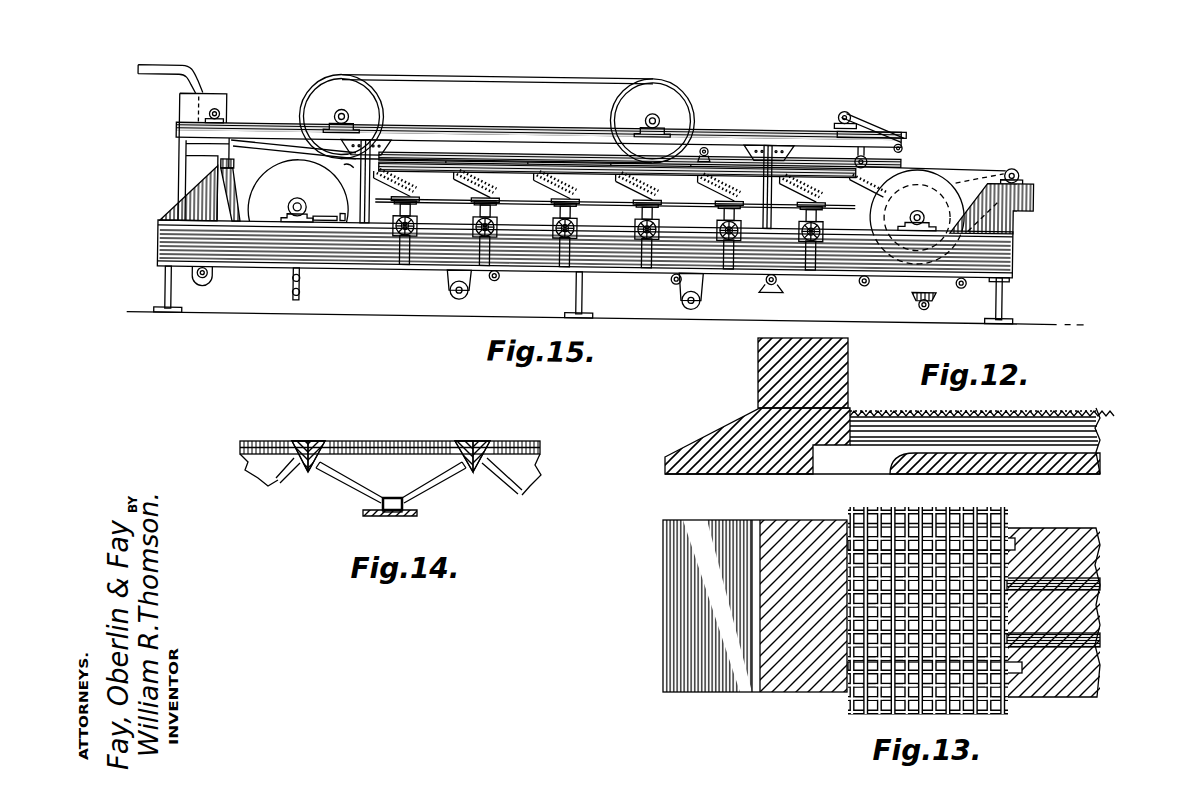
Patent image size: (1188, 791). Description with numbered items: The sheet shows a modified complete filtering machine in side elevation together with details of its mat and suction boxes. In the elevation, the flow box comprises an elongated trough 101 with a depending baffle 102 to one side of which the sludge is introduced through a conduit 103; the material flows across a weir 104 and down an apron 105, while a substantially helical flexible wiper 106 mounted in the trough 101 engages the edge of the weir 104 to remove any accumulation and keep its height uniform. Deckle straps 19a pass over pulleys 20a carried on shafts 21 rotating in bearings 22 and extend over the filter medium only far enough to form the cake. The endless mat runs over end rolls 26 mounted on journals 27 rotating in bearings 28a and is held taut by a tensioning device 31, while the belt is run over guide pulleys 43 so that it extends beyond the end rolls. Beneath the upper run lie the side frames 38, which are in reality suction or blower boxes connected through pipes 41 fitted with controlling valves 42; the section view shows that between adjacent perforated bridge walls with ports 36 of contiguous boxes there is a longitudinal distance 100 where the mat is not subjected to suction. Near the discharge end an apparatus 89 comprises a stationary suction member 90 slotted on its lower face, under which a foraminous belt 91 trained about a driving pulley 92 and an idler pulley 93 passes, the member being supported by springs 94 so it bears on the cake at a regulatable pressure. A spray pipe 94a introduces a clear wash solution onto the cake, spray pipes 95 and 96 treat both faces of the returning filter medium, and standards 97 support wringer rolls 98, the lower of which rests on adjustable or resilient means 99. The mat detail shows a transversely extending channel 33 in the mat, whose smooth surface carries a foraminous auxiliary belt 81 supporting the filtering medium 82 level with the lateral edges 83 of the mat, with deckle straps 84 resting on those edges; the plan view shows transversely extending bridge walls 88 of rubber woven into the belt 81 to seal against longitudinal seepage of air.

In FIG. 15, the deckle straps 19a is at (538, 72).
In FIG. 15, the pulley 20a is at (376, 110).
In FIG. 15, the shaft 21 is at (336, 114).
In FIG. 15, the bearing 22 is at (344, 108).
In FIG. 15, the end roll 26 is at (606, 212).
In FIG. 15, the shaft or journal 27 is at (283, 209).
In FIG. 15, the bearing 28a is at (291, 202).
In FIG. 15, the tensioning device 31 is at (337, 207).
In FIG. 12, the transversely extending channel 33 is at (782, 430).
In FIG. 14, the ports 36 is at (413, 441).
In FIG. 15, the side frames 38 is at (424, 178).
In FIG. 14, the side frames 38 is at (357, 468).
In FIG. 15, the pipes 41 is at (483, 244).
In FIG. 15, the valves 42 is at (418, 214).
In FIG. 15, the guide pulleys 43 is at (1019, 162).
In FIG. 12, the foraminous auxiliary belt 81 is at (1098, 420).
In FIG. 13, the foraminous auxiliary belt 81 is at (923, 510).
In FIG. 12, the filtering medium 82 is at (1033, 410).
In FIG. 13, the lateral edges of the mat 83 is at (803, 672).
In FIG. 12, the deckle straps 84 is at (849, 374).
In FIG. 13, the transversely extending bridge walls 88 is at (1013, 540).
In FIG. 15, the moisture withdrawing apparatus 89 is at (880, 118).
In FIG. 15, the stationary suction member 90 is at (868, 150).
In FIG. 15, the foraminous belt 91 is at (866, 112).
In FIG. 15, the driving pulley 92 is at (840, 102).
In FIG. 15, the idler pulley 93 is at (914, 134).
In FIG. 15, the springs 94 is at (622, 276).
In FIG. 15, the spray pipe 94a is at (706, 140).
In FIG. 15, the spray pipe 95 is at (935, 296).
In FIG. 15, the spray pipe 96 is at (778, 278).
In FIG. 15, the standards 97 is at (290, 272).
In FIG. 15, the wringer rolls 98 is at (295, 279).
In FIG. 15, the adjustable or resilient means 99 is at (299, 300).
In FIG. 14, the longitudinal distance 100 is at (479, 445).
In FIG. 15, the elongated trough 101 is at (202, 152).
In FIG. 15, the depending baffle 102 is at (215, 105).
In FIG. 15, the conduit 103 is at (158, 74).
In FIG. 15, the weir 104 is at (227, 99).
In FIG. 15, the apron 105 is at (233, 114).
In FIG. 15, the helical flexible wiper 106 is at (221, 108).